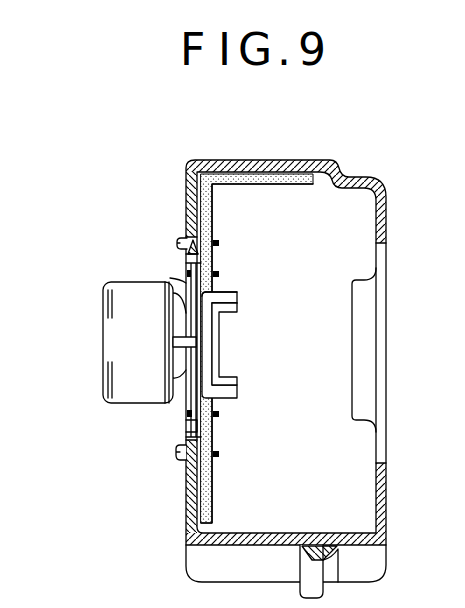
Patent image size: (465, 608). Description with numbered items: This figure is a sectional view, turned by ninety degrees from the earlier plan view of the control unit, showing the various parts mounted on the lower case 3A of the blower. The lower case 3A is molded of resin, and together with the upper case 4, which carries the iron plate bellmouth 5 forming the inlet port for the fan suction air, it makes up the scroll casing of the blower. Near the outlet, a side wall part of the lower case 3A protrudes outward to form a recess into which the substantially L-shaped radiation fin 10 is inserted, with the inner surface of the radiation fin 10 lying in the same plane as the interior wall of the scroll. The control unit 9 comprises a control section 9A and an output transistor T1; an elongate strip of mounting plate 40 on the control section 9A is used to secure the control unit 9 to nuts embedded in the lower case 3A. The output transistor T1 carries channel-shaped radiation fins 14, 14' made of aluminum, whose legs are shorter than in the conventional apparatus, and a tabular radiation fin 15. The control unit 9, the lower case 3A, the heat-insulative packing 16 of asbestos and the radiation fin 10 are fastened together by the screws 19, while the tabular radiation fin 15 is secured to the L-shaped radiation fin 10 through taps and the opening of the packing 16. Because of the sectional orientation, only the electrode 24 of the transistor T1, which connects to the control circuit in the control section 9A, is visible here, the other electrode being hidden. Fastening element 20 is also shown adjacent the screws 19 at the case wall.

The lower case 3A is at (195, 158).
The upper case 4 is at (382, 220).
The bellmouth 5 is at (386, 203).
The control unit 9 is at (77, 426).
The control section 9A is at (102, 355).
The L-shaped radiation fin 10 is at (213, 483).
The channel-shaped radiation fin 14 is at (254, 342).
The channel-shaped radiation fin 14' is at (247, 278).
The output transistor T1 is at (221, 343).
The tabular radiation fin 15 is at (184, 403).
The packing 16 is at (185, 518).
The screws 19 is at (183, 240).
The nut 20 is at (188, 271).
The electrode 24 is at (180, 341).
The mounting plate 40 is at (170, 278).